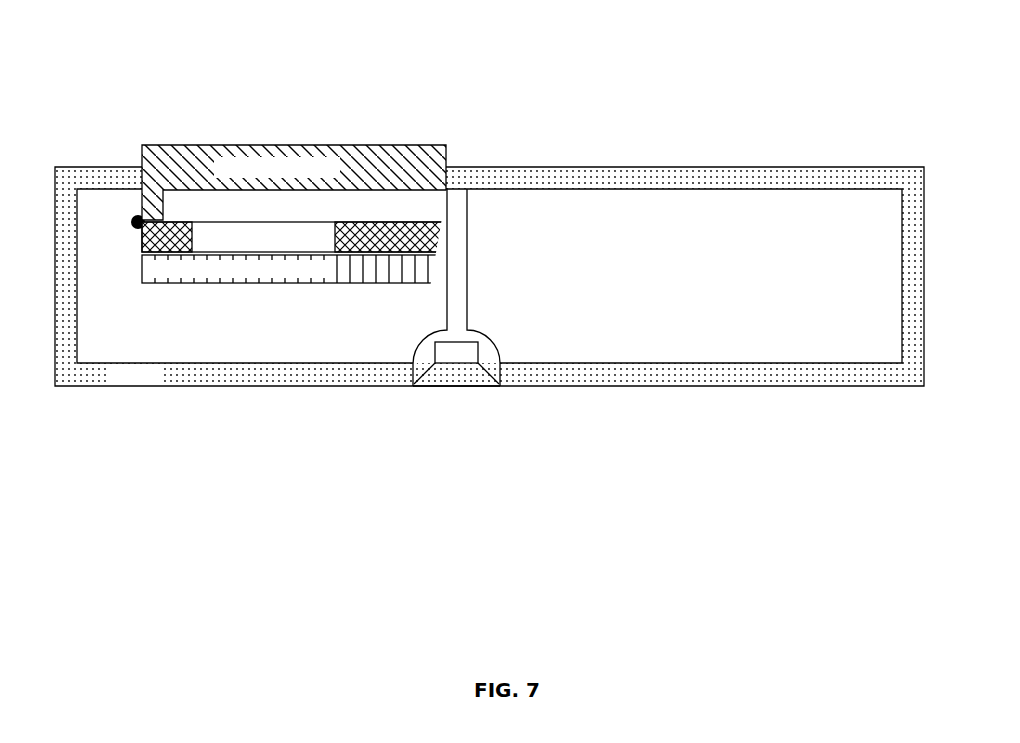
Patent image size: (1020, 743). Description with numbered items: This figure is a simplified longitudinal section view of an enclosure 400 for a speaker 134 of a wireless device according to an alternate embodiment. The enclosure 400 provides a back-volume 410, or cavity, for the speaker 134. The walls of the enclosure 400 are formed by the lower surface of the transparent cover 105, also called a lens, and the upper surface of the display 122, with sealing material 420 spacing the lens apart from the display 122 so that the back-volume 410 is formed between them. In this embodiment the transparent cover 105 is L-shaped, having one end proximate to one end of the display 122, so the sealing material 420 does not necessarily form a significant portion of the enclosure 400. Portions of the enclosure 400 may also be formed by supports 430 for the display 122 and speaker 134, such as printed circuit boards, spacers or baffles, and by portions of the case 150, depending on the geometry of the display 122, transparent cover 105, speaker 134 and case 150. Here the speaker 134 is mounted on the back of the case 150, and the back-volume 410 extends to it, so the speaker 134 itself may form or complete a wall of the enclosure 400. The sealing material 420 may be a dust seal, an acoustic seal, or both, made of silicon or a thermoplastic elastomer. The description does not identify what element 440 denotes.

The transparent cover 105 is at (328, 147).
The display 122 is at (195, 235).
The case 150 is at (689, 168).
The enclosure 400 is at (451, 216).
The back-volume 410 is at (377, 197).
The sealing material 420 is at (124, 233).
The supports 430 is at (307, 273).
The opening in case 440 is at (452, 401).
The speaker 134 is at (468, 365).